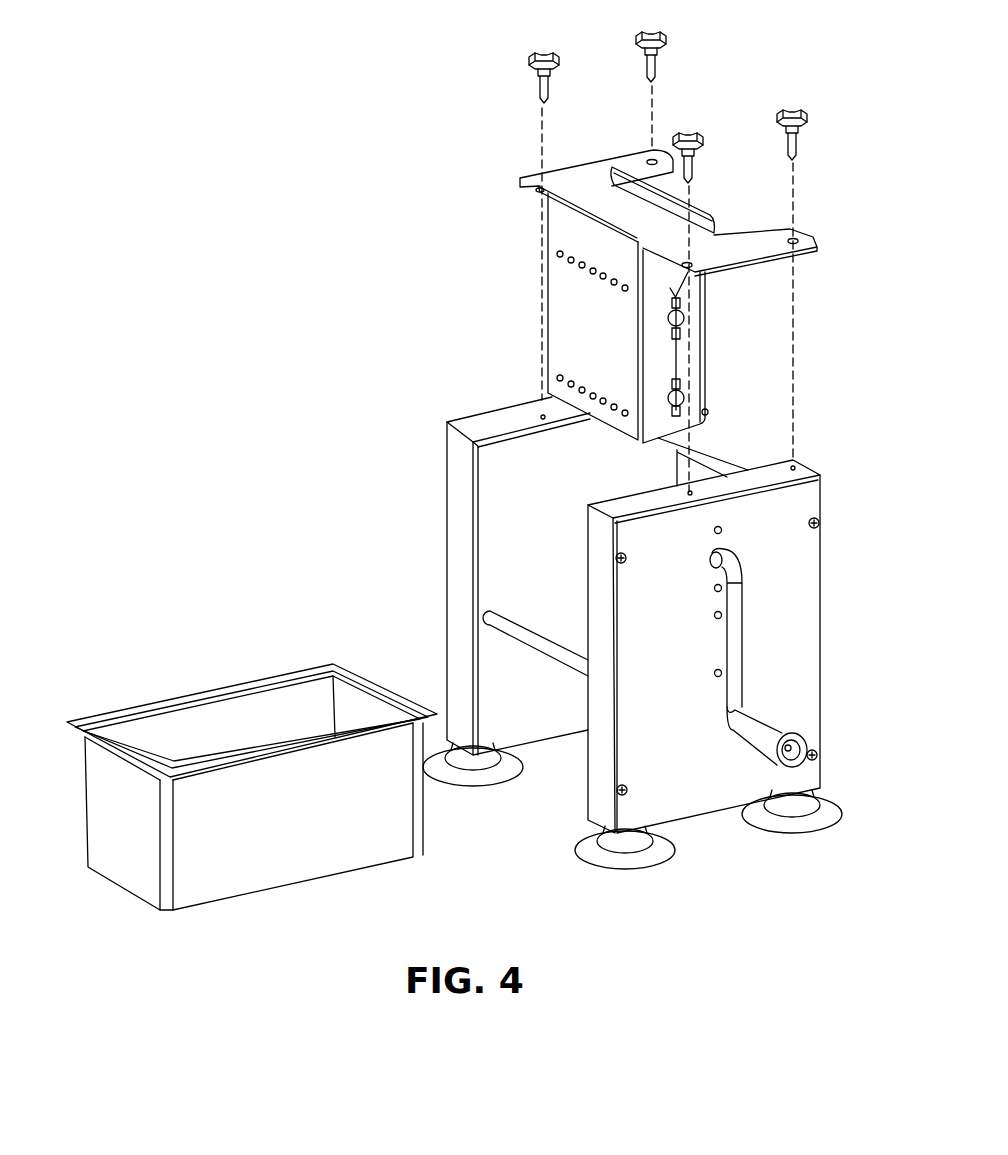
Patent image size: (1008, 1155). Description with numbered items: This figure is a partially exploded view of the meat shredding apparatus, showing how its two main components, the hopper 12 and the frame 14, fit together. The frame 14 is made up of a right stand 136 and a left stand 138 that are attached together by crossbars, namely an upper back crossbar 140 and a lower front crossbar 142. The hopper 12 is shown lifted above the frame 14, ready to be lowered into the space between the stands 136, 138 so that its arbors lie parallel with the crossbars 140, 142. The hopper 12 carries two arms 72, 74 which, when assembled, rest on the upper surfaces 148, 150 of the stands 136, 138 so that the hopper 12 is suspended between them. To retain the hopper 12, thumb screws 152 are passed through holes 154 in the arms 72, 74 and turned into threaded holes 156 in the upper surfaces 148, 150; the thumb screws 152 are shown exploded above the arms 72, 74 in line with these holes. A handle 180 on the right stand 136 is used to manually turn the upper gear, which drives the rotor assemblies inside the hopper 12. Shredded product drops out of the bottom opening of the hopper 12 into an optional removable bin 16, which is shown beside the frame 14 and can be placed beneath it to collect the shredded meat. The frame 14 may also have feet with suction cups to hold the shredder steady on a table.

The hopper 12 is at (708, 340).
The frame 14 is at (445, 480).
The removable bin 16 is at (260, 677).
The arm 72 is at (752, 240).
The arm 74 is at (568, 168).
The right stand 136 is at (707, 817).
The left stand 138 is at (450, 550).
The upper back crossbar 140 is at (727, 455).
The lower front crossbar 142 is at (533, 648).
The upper surface 148 is at (760, 478).
The upper surface 150 is at (490, 422).
The thumb screws 152 is at (545, 55).
The holes 154 is at (645, 157).
The threaded holes 156 is at (543, 417).
The handle 180 is at (742, 640).